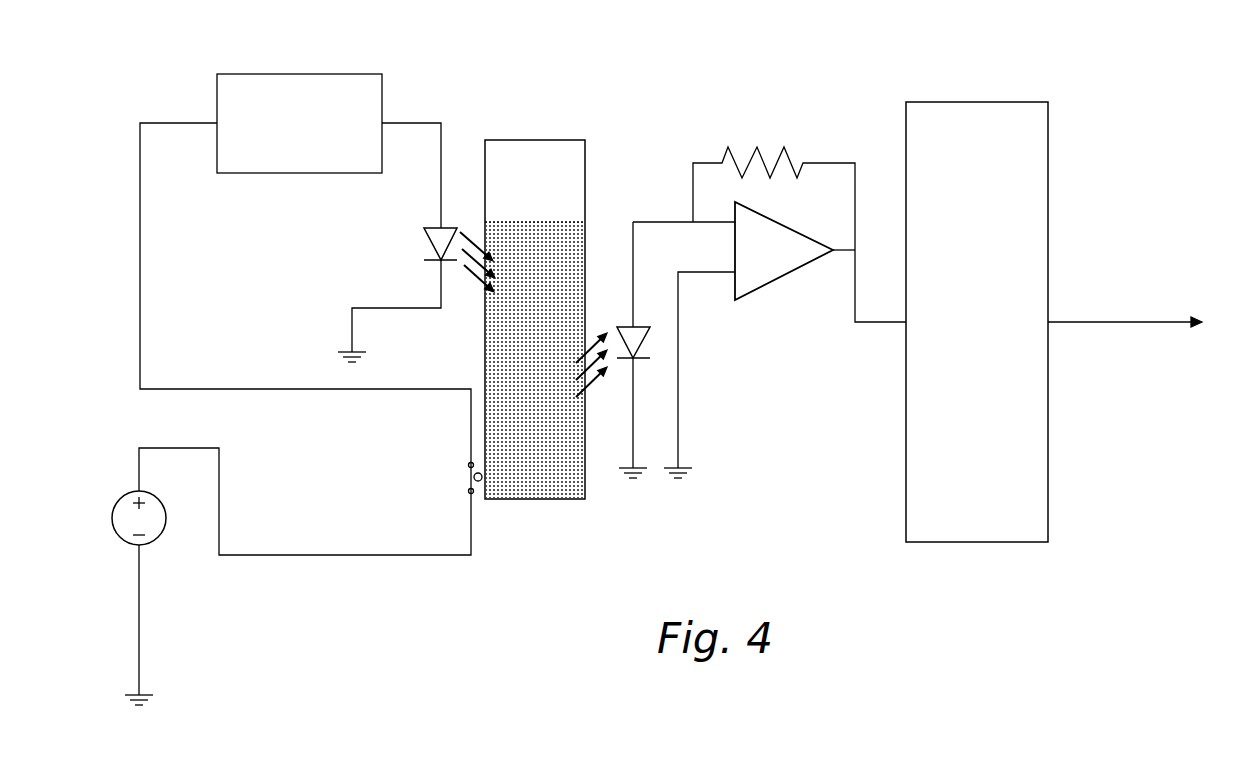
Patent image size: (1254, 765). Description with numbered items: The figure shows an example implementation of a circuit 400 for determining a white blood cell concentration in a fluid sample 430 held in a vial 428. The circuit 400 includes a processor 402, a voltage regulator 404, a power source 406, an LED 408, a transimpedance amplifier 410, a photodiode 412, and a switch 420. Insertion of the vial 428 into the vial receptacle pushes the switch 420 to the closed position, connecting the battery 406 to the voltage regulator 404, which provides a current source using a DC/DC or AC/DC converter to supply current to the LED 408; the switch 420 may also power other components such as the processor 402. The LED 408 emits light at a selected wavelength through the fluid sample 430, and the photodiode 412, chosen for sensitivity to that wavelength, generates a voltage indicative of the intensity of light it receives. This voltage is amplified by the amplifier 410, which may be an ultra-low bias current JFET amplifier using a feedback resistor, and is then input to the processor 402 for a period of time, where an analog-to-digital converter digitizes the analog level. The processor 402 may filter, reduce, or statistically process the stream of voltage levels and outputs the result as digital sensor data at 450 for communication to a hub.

The circuit 400 is at (642, 370).
The processor 402 is at (977, 322).
The voltage regulator 404 is at (299, 123).
The power source 406 is at (150, 545).
The LED 408 is at (423, 238).
The transimpedance amplifier 410 is at (785, 278).
The photodiode 412 is at (647, 343).
The switch 420 is at (470, 493).
The vial 428 is at (540, 140).
The fluid sample 430 is at (558, 235).
The digital sensor data output 450 is at (1098, 325).